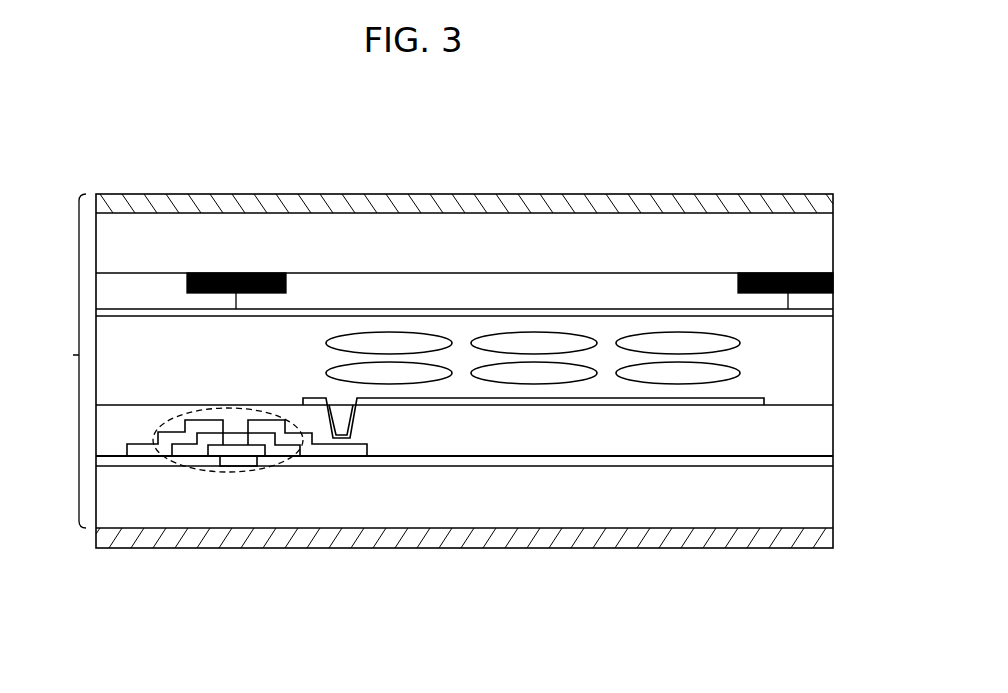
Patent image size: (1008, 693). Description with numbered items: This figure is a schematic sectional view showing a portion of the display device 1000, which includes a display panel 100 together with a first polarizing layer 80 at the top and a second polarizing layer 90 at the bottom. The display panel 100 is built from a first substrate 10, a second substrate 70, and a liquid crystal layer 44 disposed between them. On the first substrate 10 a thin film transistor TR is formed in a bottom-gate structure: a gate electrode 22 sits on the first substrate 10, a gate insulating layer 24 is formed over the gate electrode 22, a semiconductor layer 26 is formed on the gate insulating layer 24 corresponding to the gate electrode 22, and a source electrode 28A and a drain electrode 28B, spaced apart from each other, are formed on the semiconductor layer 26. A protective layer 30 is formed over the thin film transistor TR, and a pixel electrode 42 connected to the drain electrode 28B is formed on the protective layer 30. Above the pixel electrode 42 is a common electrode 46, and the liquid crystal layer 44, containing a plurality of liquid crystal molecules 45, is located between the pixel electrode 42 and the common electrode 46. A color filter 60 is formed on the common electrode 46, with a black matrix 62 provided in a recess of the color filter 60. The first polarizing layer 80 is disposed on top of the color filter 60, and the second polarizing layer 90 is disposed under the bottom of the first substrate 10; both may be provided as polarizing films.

The display device 1000 is at (646, 180).
The display panel 100 is at (59, 361).
The first polarizing layer 80 is at (815, 203).
The second substrate 70 is at (815, 247).
The black matrix 62 is at (262, 271).
The color filter 60 is at (370, 286).
The common electrode 46 is at (815, 313).
The liquid crystal layer 44 is at (815, 347).
The liquid crystal molecules 45 is at (741, 373).
The pixel electrode 42 is at (539, 403).
The protective layer 30 is at (463, 437).
The source electrode 28A is at (139, 451).
The drain electrode 28B is at (341, 451).
The semiconductor layer 26 is at (201, 450).
The gate insulating layer 24 is at (305, 462).
The gate electrode 22 is at (242, 462).
The thin film transistor TR is at (181, 467).
The first substrate 10 is at (815, 500).
The second polarizing layer 90 is at (815, 540).